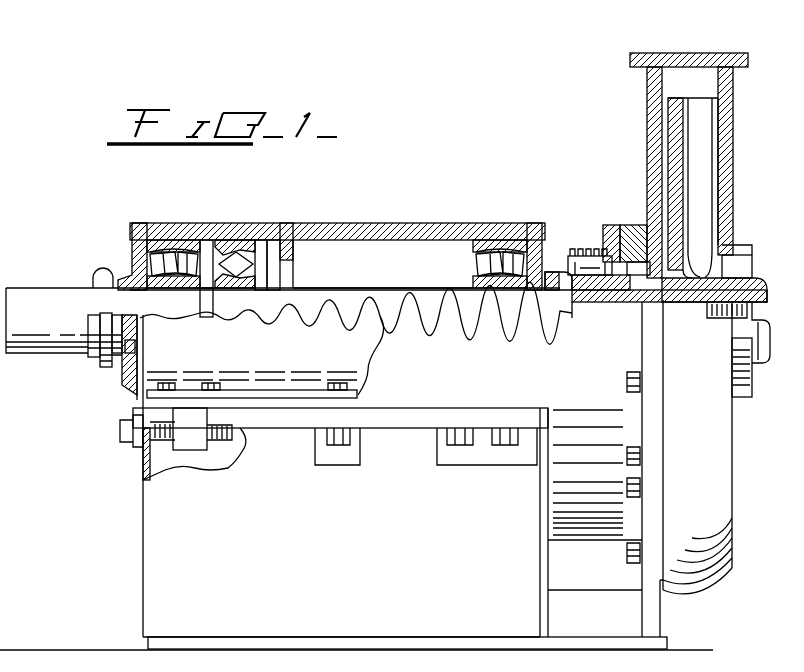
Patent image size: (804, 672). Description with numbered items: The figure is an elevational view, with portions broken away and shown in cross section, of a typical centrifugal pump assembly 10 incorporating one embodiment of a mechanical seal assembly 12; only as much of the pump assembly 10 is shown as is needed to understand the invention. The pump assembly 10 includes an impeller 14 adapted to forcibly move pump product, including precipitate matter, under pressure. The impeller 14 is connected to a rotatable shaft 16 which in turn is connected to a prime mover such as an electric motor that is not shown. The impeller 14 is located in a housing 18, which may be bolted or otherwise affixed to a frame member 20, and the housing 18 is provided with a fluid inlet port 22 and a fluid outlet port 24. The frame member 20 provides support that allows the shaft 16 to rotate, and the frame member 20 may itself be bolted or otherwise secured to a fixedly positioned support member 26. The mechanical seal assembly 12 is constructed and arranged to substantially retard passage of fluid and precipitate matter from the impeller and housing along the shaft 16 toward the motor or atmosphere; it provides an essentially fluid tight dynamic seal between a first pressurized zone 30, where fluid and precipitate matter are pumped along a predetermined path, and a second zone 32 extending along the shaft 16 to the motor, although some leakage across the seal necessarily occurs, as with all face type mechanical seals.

The pump assembly 10 is at (764, 74).
The mechanical seal assembly 12 is at (647, 255).
The impeller 14 is at (707, 117).
The rotatable shaft 16 is at (32, 298).
The housing 18 is at (705, 523).
The frame member 20 is at (593, 396).
The fluid inlet port 22 is at (745, 267).
The fluid outlet port 24 is at (688, 64).
The support member 26 is at (378, 582).
The first pressurized zone 30 is at (620, 247).
The second zone 32 is at (645, 298).